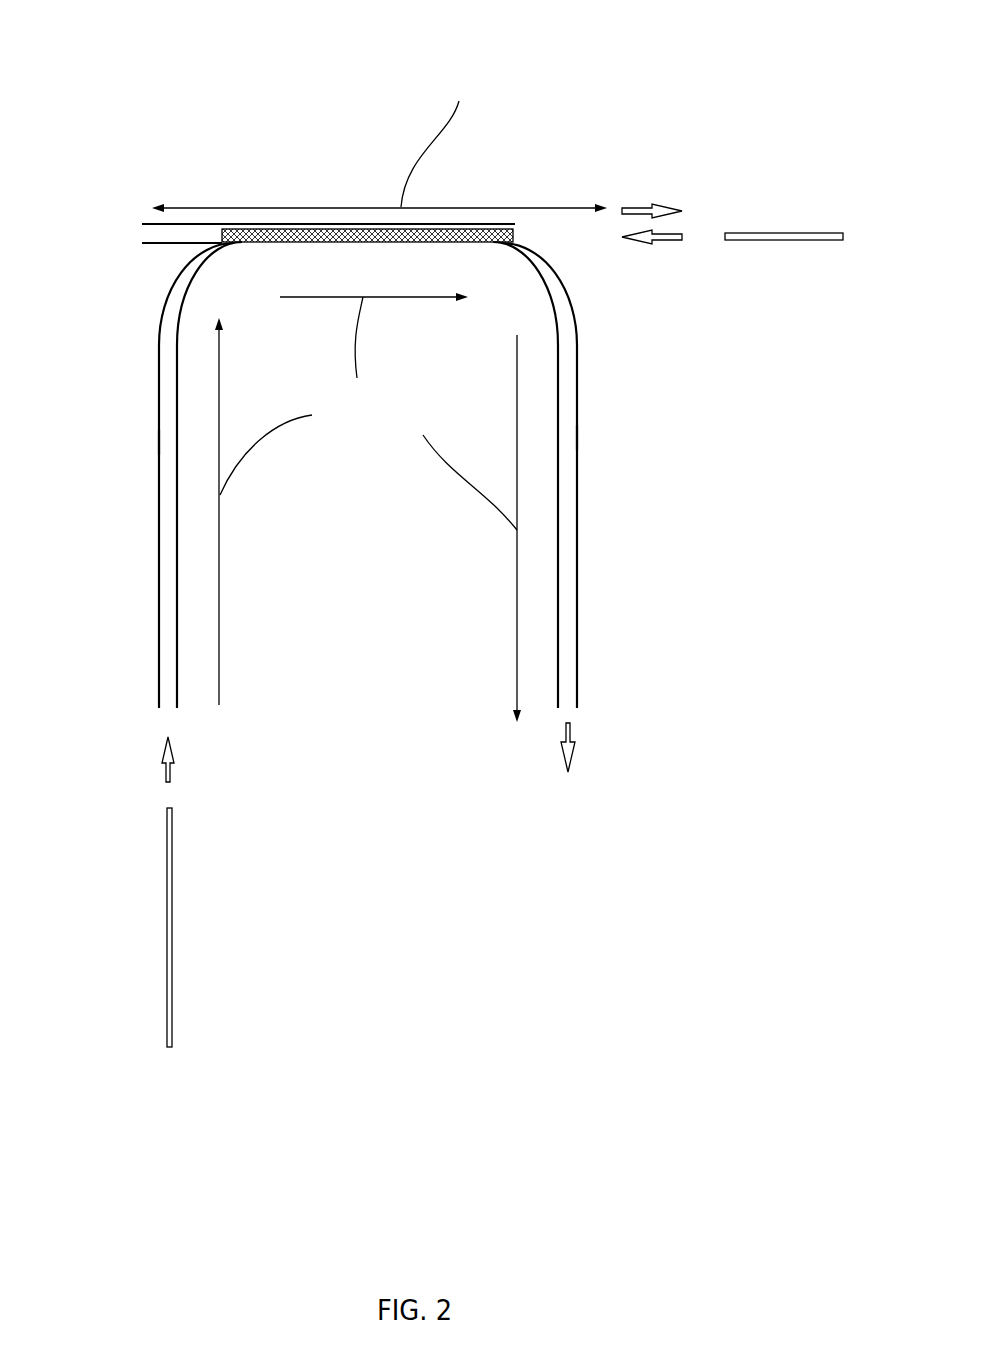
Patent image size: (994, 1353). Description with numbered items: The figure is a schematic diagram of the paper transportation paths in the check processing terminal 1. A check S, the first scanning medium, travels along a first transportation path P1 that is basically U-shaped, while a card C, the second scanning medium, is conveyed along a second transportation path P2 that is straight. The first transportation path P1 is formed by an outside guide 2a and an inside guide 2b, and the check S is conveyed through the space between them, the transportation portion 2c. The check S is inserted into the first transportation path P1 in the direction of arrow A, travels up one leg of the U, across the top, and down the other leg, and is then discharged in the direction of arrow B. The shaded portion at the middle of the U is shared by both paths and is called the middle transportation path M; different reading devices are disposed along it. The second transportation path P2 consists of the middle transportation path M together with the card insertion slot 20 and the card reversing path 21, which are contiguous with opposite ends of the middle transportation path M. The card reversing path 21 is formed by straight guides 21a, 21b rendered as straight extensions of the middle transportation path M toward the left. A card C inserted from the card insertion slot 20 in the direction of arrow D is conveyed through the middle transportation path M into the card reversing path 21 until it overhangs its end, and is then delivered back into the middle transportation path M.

The check processing terminal 1 is at (366, 110).
The outside guide 2a is at (158, 532).
The inside guide 2b is at (177, 643).
The transportation portion 2c is at (156, 597).
The card insertion slot 20 is at (534, 236).
The card reversing path 21 is at (130, 235).
The straight guide 21a is at (150, 224).
The straight guide 21b is at (157, 245).
The first transportation path P1 is at (146, 443).
The second transportation path P2 is at (508, 212).
The middle transportation path M is at (277, 229).
The check insertion direction A is at (165, 770).
The check discharge direction B is at (572, 735).
The card C is at (668, 242).
The card insertion direction D is at (637, 207).
The check S is at (172, 910).